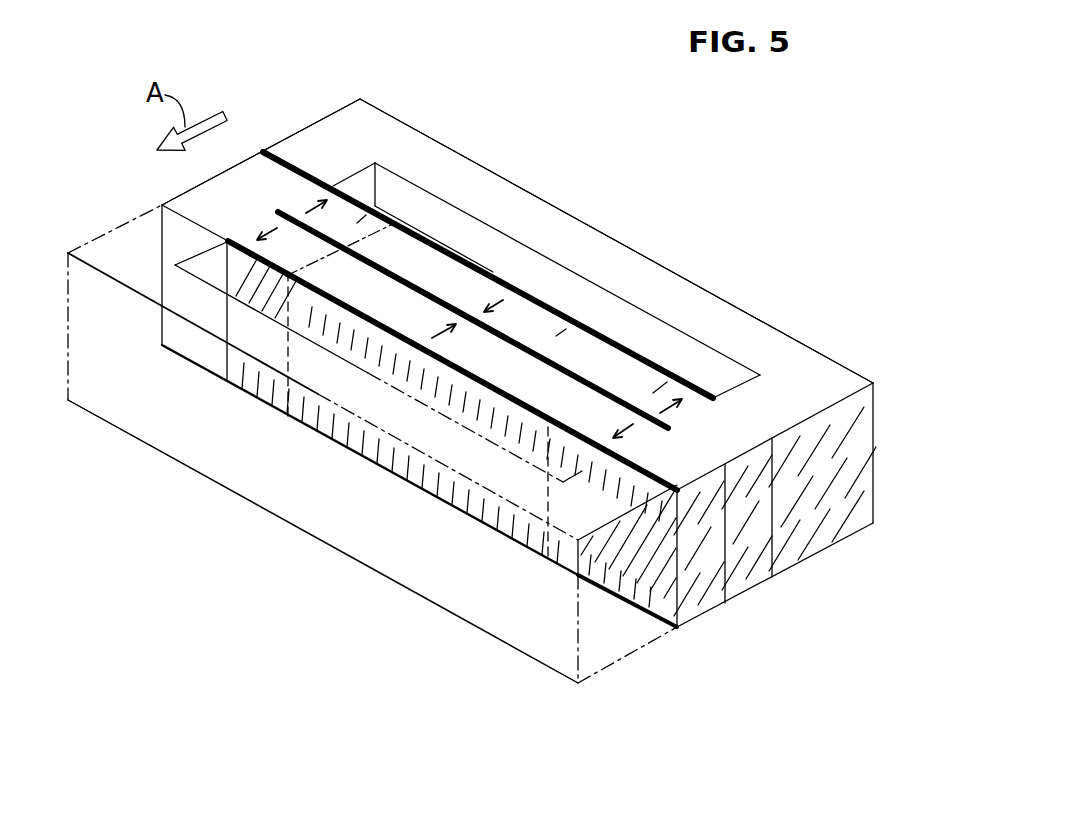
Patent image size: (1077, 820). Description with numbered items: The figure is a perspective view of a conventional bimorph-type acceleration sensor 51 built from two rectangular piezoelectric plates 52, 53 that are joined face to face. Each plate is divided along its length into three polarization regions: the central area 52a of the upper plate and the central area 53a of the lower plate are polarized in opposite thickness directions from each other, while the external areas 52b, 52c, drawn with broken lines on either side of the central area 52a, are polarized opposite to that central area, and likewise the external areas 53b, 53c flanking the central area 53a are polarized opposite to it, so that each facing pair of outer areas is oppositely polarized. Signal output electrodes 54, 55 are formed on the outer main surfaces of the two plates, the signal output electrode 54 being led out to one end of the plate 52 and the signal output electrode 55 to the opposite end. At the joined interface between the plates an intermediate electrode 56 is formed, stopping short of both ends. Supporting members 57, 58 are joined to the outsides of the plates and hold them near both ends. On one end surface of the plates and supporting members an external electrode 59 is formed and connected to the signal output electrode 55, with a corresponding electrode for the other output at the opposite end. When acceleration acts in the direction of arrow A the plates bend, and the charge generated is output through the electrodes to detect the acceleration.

The acceleration sensor 51 is at (236, 70).
The piezoelectric plate 52 is at (755, 423).
The central area 52a is at (613, 294).
The external area 52b is at (401, 197).
The external area 52c is at (678, 373).
The piezoelectric plate 53 is at (187, 221).
The central area 53a is at (476, 360).
The external area 53b is at (213, 222).
The external area 53c is at (578, 540).
The signal output electrode 54 is at (493, 274).
The signal output electrode 55 is at (325, 433).
The intermediate electrode 56 is at (423, 290).
The supporting member 57 is at (412, 126).
The supporting member 58 is at (228, 476).
The external electrode 59 is at (795, 548).